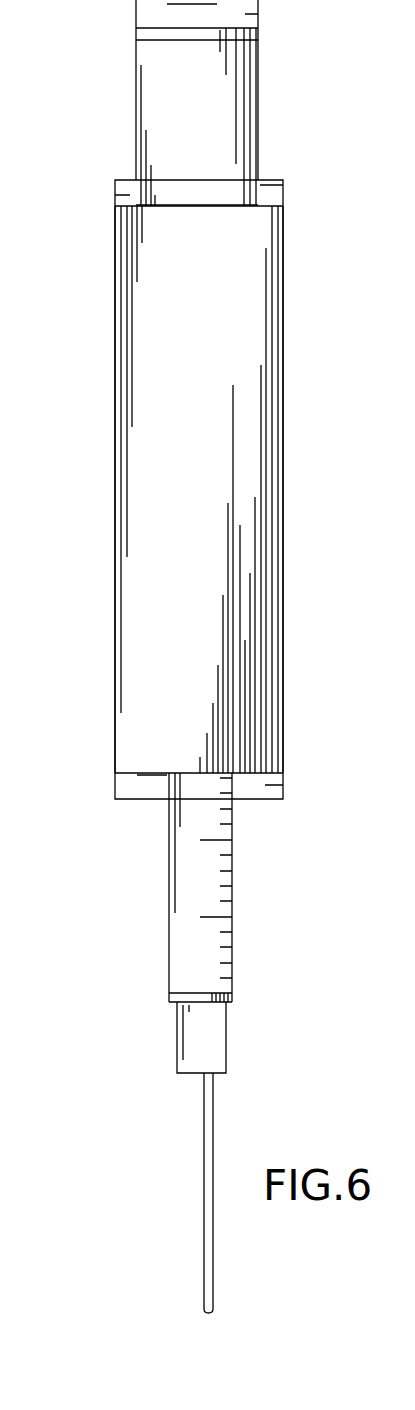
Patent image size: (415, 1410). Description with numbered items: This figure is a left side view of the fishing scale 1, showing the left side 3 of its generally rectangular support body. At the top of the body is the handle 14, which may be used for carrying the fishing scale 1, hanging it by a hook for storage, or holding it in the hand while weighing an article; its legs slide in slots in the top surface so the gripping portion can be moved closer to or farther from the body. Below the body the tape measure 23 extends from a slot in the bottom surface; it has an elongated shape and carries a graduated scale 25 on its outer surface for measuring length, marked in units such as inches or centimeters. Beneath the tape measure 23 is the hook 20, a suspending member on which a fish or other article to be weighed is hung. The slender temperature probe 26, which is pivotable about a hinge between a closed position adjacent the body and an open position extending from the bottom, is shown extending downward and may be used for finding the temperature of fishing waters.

The fishing scale 1 is at (61, 334).
The handle 14 is at (175, 104).
The left side 3 is at (253, 425).
The tape measure 23 is at (188, 950).
The graduated scale 25 is at (209, 840).
The hook 20 is at (207, 1040).
The temperature probe 26 is at (204, 1212).